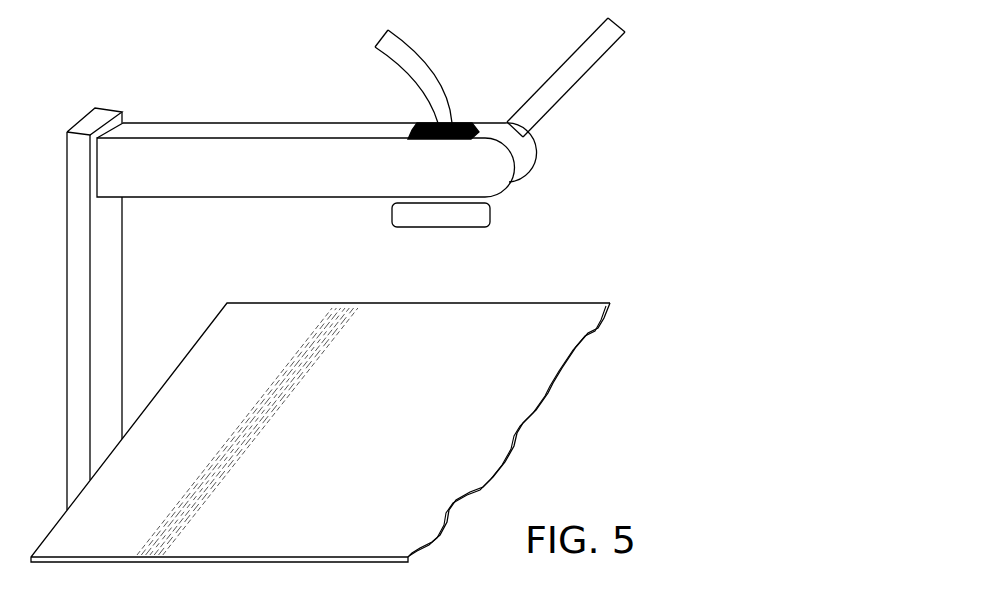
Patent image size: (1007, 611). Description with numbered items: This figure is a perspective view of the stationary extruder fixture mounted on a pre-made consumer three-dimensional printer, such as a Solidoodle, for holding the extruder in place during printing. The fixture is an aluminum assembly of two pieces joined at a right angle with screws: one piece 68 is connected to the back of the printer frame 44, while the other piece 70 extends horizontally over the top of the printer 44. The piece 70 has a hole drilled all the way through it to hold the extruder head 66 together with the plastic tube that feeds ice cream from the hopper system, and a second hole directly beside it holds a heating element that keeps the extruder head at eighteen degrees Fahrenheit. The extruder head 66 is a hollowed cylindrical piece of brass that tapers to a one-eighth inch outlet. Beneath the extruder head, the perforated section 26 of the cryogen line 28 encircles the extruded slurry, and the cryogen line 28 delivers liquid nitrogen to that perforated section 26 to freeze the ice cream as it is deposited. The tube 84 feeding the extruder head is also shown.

The perforated section 26 is at (490, 215).
The cryogen line 28 is at (560, 85).
The 3D printer frame 44 is at (515, 427).
The extruder head 66 is at (392, 204).
The extruder fixture piece connected to printer frame 68 is at (112, 292).
The extruder fixture piece extending over printer 70 is at (261, 147).
The tube 84 is at (420, 62).